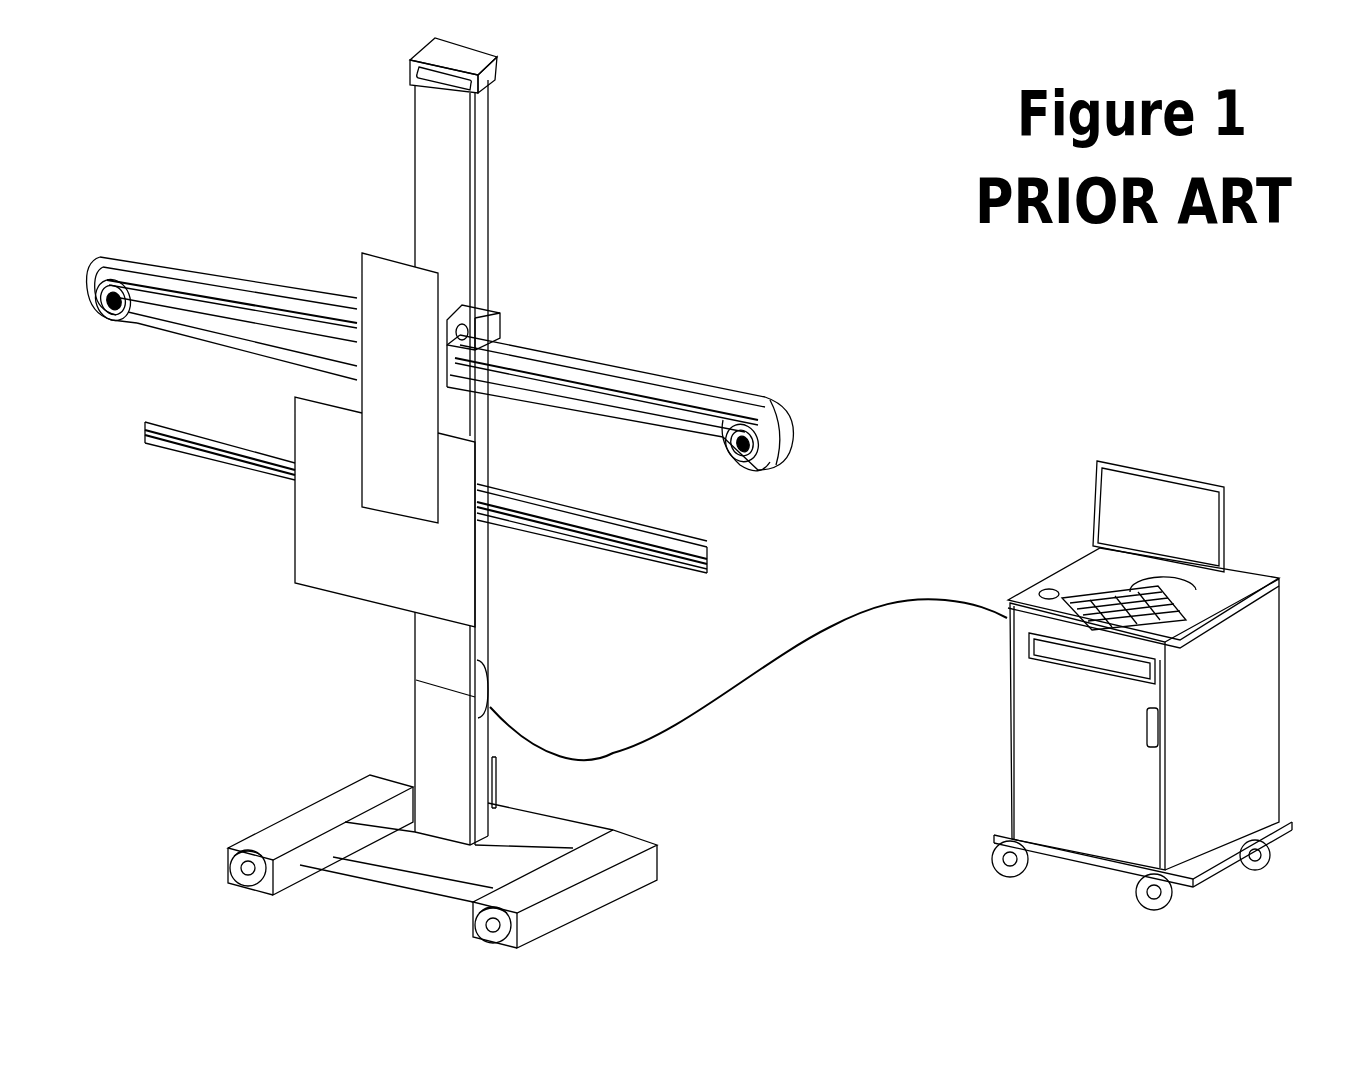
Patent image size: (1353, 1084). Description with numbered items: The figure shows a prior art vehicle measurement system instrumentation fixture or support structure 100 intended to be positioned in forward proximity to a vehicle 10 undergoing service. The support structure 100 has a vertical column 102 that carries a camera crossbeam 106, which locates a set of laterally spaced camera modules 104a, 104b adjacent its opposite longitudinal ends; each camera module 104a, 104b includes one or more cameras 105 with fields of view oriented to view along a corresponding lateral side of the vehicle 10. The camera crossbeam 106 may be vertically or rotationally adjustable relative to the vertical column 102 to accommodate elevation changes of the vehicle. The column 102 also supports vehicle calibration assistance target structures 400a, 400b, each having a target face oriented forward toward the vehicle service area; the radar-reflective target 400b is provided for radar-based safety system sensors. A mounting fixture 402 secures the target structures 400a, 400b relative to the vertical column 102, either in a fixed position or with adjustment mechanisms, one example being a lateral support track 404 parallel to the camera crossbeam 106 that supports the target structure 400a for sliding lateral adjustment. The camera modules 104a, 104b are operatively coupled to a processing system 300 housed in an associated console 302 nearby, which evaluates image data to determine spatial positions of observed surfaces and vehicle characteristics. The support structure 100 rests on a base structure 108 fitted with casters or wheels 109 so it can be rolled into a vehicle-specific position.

The vehicle 10 is at (861, 281).
The support structure 100 is at (567, 222).
The vertical column 102 is at (436, 161).
The camera module 104a is at (790, 437).
The camera module 104b is at (113, 263).
The camera 105 is at (123, 307).
The camera crossbeam 106 is at (577, 390).
The base structure 108 is at (303, 827).
The casters or wheels 109 is at (233, 883).
The processing system 300 is at (1178, 465).
The console 302 is at (996, 726).
The target structure 400a is at (335, 562).
The target structure 400b is at (382, 468).
The mounting fixture 402 is at (462, 331).
The lateral support track 404 is at (575, 550).